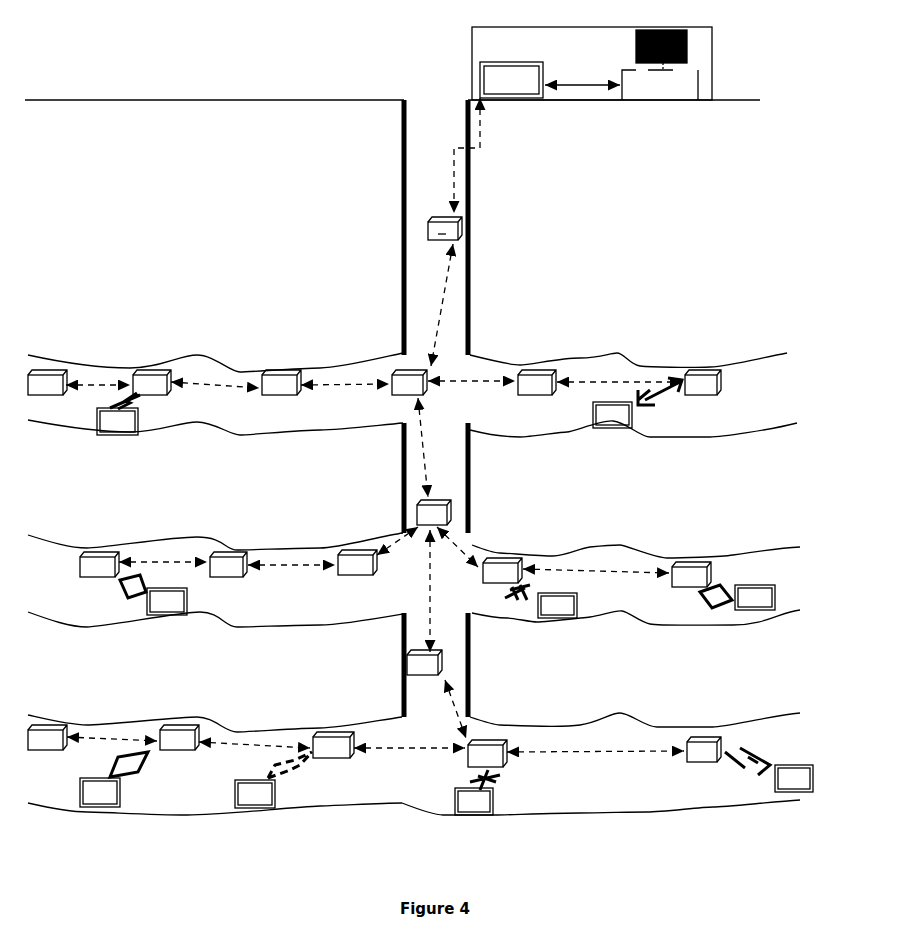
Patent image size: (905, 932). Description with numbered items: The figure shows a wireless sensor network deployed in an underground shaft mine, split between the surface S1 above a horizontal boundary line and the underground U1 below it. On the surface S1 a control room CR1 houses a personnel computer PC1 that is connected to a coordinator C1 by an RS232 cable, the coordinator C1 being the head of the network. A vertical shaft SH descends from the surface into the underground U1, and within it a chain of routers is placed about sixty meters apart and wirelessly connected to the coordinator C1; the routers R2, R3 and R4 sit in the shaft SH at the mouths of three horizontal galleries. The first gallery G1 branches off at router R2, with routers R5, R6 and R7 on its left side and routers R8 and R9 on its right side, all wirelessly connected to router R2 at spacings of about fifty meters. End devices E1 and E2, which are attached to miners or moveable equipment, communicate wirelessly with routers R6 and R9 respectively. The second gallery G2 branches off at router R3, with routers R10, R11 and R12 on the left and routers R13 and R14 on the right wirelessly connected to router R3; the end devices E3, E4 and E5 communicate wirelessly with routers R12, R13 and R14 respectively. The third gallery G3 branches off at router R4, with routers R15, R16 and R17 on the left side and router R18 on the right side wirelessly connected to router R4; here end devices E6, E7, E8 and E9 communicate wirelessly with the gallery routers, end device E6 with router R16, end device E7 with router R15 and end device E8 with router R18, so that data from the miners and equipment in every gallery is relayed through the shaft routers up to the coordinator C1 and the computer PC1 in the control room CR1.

The surface S1 is at (392, 83).
The underground U1 is at (48, 139).
The shaft SH is at (447, 232).
The coordinator C1 is at (511, 80).
The control room CR1 is at (582, 72).
The personnel computer PC1 is at (660, 65).
The router R2 is at (364, 433).
The router R3 is at (434, 576).
The router R4 is at (436, 694).
The router R5 is at (236, 382).
The router R6 is at (118, 382).
The router R7 is at (47, 382).
The router R8 is at (492, 382).
The router R9 is at (639, 382).
The router R10 is at (333, 551).
The router R11 is at (183, 564).
The router R12 is at (99, 564).
The router R13 is at (479, 555).
The router R14 is at (617, 574).
The router R15 is at (276, 745).
The router R16 is at (133, 737).
The router R17 is at (47, 737).
The router R18 is at (537, 752).
The end device E1 is at (118, 414).
The end device E2 is at (637, 403).
The end device E3 is at (153, 595).
The end device E4 is at (541, 601).
The end device E5 is at (737, 597).
The end device E6 is at (114, 779).
The end device E7 is at (273, 780).
The end device E8 is at (477, 792).
The end device E9 is at (769, 770).
The first gallery G1 is at (412, 396).
The second gallery G2 is at (414, 580).
The third gallery G3 is at (414, 764).